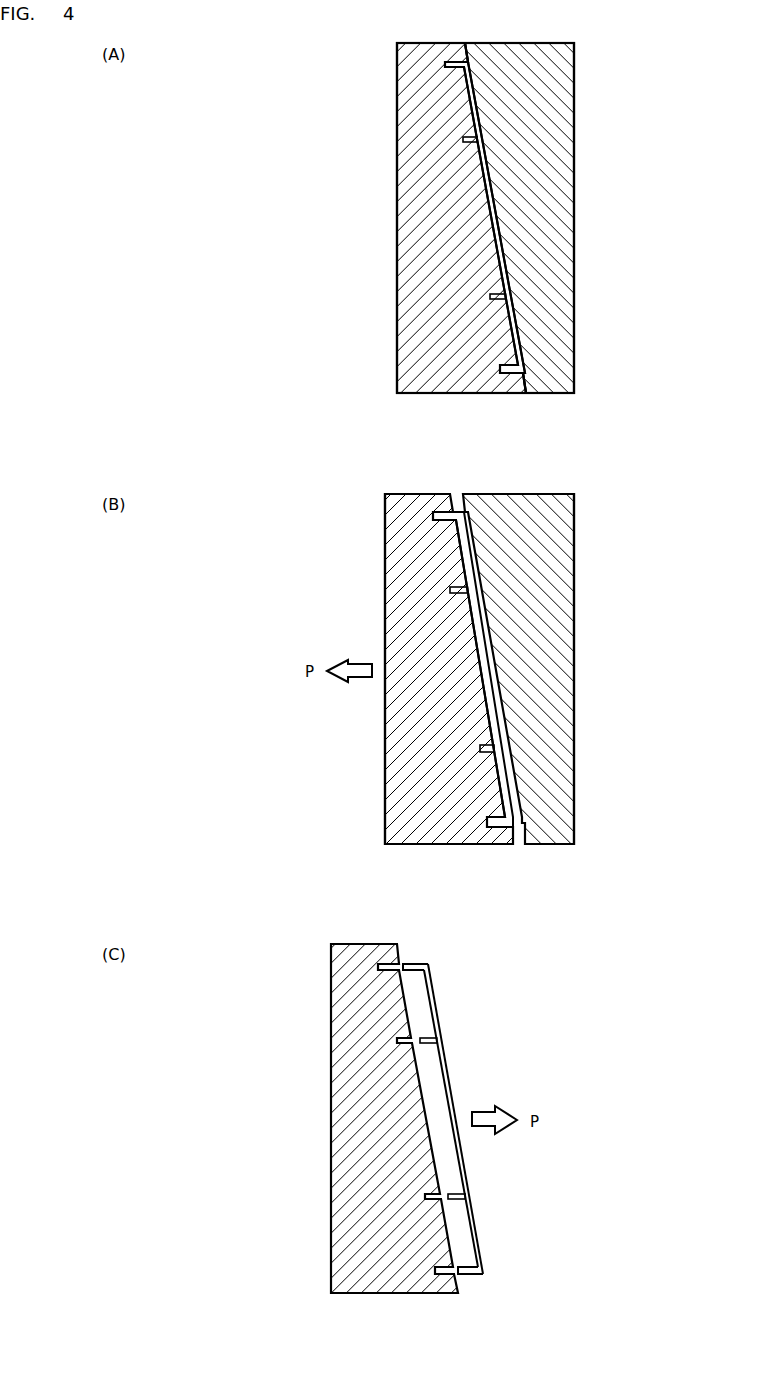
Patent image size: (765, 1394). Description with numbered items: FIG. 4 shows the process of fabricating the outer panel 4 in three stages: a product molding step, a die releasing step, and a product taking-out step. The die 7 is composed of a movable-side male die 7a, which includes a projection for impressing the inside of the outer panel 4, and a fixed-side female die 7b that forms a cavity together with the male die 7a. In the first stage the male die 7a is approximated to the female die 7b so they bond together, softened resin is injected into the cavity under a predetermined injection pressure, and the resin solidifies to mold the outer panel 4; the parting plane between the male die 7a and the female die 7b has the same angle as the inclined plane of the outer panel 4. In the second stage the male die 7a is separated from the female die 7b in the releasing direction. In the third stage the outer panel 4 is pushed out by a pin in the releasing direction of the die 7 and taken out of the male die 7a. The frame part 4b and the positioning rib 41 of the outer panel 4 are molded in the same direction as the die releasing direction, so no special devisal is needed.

The die 7 is at (380, 95).
The male die 7a is at (397, 157).
The female die 7b is at (576, 247).
The outer panel 4 is at (490, 182).
The frame part 4b is at (415, 962).
The positioning rib 41 is at (425, 1037).